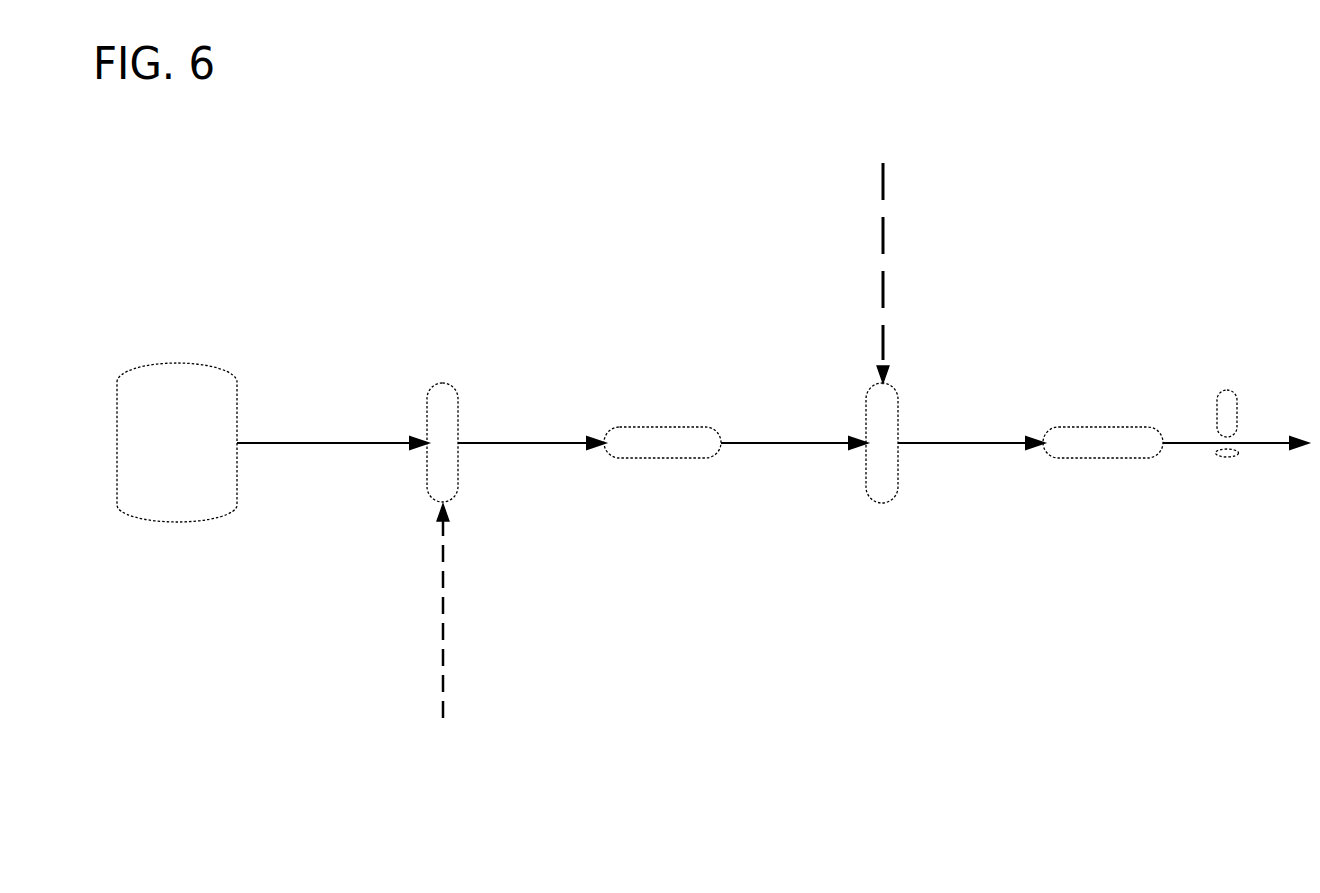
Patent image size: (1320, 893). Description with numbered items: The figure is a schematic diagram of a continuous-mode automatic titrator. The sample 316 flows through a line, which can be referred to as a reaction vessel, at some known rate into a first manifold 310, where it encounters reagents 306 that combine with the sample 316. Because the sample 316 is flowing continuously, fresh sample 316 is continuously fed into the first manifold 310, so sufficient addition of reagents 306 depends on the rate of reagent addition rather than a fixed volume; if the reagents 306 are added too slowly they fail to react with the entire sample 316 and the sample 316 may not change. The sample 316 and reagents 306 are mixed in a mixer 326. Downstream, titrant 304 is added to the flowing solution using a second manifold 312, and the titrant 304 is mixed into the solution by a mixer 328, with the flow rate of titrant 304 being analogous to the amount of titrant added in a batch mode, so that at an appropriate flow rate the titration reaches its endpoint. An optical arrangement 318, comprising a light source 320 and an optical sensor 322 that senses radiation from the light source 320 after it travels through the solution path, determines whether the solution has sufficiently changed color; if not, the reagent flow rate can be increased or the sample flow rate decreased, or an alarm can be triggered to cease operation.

The titrant 304 is at (892, 178).
The reagents 306 is at (433, 710).
The first manifold 310 is at (441, 403).
The second manifold 312 is at (882, 482).
The sample 316 is at (163, 375).
The optical arrangement 318 is at (1186, 390).
The light source 320 is at (1232, 387).
The optical sensor 322 is at (1227, 458).
The mixer 326 is at (650, 437).
The mixer 328 is at (1095, 437).